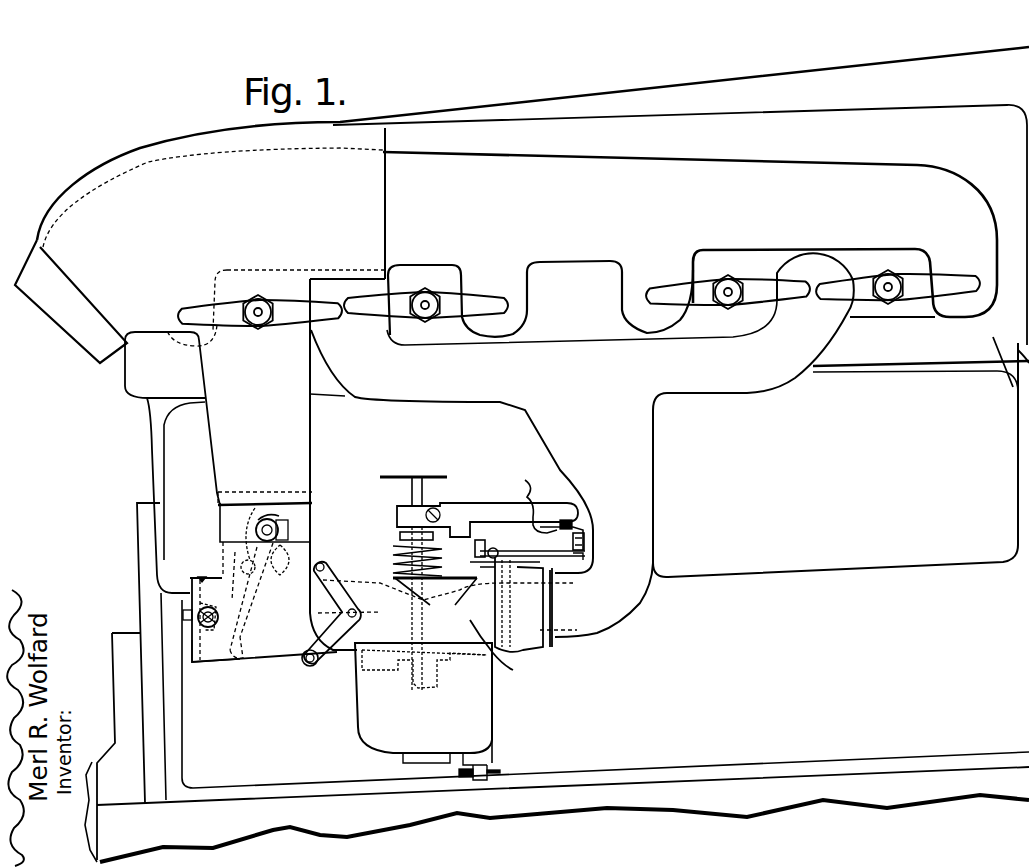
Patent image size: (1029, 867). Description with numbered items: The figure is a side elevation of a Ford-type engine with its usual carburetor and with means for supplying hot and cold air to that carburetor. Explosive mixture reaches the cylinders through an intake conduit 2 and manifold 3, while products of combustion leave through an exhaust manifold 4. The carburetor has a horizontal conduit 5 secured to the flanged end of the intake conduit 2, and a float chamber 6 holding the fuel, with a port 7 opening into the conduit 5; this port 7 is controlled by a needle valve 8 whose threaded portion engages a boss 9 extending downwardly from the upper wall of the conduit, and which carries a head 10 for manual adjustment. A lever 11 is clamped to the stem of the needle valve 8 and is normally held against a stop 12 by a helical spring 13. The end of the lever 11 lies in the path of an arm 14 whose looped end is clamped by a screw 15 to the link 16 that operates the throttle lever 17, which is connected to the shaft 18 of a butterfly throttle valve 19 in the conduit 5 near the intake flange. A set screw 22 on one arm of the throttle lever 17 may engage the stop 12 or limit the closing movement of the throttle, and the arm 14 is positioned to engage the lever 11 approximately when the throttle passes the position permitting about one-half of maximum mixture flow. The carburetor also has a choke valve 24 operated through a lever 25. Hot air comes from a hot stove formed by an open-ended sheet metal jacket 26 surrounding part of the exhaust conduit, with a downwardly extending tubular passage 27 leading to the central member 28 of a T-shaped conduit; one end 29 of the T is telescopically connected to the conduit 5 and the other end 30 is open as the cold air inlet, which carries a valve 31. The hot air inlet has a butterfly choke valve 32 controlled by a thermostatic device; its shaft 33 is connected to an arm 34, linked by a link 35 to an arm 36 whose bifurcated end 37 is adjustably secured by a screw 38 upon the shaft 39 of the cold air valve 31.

The intake conduit 2 is at (650, 543).
The manifold 3 is at (730, 377).
The exhaust manifold 4 is at (80, 333).
The horizontal conduit 5 is at (502, 654).
The float chamber 6 is at (477, 682).
The port 7 is at (437, 697).
The needle valve 8 is at (423, 623).
The boss 9 is at (432, 607).
The head 10 is at (430, 478).
The lever 11 is at (460, 505).
The stop 12 is at (475, 555).
The helical spring 13 is at (397, 548).
The arm 14 is at (550, 502).
The screw 15 is at (573, 522).
The link 16 is at (587, 548).
The throttle lever 17 is at (538, 544).
The shaft 18 is at (497, 551).
The throttle valve 19 is at (540, 643).
The set screw 22 is at (490, 570).
The choke valve 24 is at (366, 592).
The lever 25 is at (325, 572).
The sheet metal jacket 26 is at (373, 213).
The tubular passage 27 is at (230, 410).
The central member 28 is at (312, 495).
The end 29 is at (310, 667).
The end 30 is at (200, 665).
The valve 31 is at (218, 608).
The choke valve 32 is at (248, 505).
The shaft 33 is at (268, 515).
The arm 34 is at (268, 570).
The link 35 is at (248, 600).
The arm 36 is at (250, 660).
The bifurcated end 37 is at (190, 602).
The screw 38 is at (203, 578).
The shaft 39 is at (213, 630).